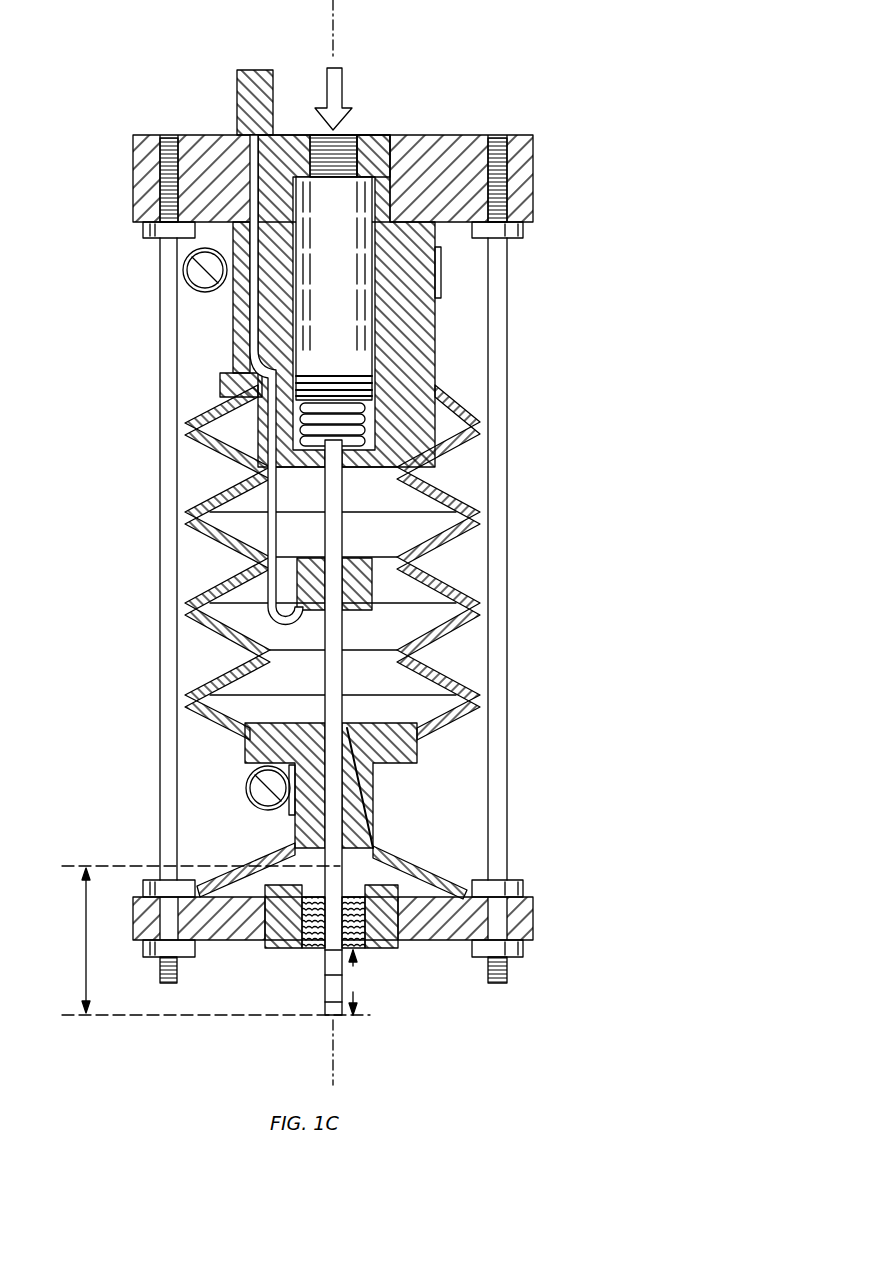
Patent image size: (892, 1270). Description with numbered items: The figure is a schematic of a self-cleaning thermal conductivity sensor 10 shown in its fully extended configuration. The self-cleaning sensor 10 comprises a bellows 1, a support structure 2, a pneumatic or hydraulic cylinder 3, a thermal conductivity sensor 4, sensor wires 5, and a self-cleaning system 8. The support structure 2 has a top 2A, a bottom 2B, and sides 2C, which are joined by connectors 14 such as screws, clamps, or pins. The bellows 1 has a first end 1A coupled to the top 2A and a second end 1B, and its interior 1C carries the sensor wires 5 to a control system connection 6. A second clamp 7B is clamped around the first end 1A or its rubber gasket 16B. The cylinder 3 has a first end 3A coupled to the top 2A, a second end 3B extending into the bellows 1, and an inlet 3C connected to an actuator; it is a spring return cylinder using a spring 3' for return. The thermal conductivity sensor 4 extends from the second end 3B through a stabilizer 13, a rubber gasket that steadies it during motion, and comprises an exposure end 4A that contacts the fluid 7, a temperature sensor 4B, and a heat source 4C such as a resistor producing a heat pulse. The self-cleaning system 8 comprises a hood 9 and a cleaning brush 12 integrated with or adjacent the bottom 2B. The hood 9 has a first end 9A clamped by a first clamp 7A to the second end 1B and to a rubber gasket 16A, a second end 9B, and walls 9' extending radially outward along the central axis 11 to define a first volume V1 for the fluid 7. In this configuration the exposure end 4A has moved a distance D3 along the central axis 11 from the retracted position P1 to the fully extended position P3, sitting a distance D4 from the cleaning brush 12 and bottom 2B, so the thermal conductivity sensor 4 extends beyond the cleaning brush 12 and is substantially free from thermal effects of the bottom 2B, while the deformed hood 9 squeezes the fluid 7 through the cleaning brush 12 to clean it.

The self-cleaning thermal conductivity sensor 10 is at (205, 43).
The bellows 1 is at (337, 491).
The first end of the bellows 1A is at (436, 310).
The second end of the bellows 1B is at (418, 745).
The interior of the bellows 1C is at (400, 580).
The support structure 2 is at (330, 568).
The top of the support structure 2A is at (133, 172).
The bottom of the support structure 2B is at (238, 942).
The sides of the support structure 2C is at (507, 380).
The pneumatic or hydraulic cylinder 3 is at (416, 264).
The first end of the pneumatic or hydraulic cylinder 3A is at (365, 173).
The second end of the pneumatic or hydraulic cylinder 3B is at (372, 388).
The pneumatic or hydraulic cylinder inlet 3C is at (338, 157).
The spring 3' is at (418, 424).
The thermal conductivity sensor 4 is at (355, 750).
The exposure end 4A is at (328, 1012).
The temperature sensor 4B is at (328, 990).
The heat source 4C is at (328, 963).
The sensor wires 5 is at (222, 385).
The control system connection 6 is at (247, 98).
The fluid 7 is at (250, 530).
The first clamp 7A is at (248, 768).
The second clamp 7B is at (190, 285).
The self-cleaning system 8 is at (395, 882).
The hood 9 is at (344, 869).
The first end of the hood 9A is at (375, 850).
The second end of the hood 9B is at (210, 878).
The walls of the hood 9' is at (282, 879).
The central axis 11 is at (333, 1040).
The cleaning brush 12 is at (312, 948).
The stabilizer 13 is at (275, 625).
The connectors 14 is at (150, 240).
The rubber gasket 16A is at (289, 830).
The rubber gasket 16B is at (440, 272).
The distance D3 is at (214, 940).
The distance D4 is at (358, 982).
The retracted position P1 is at (365, 865).
The fully extended position P3 is at (340, 1018).
The first volume V1 is at (352, 867).